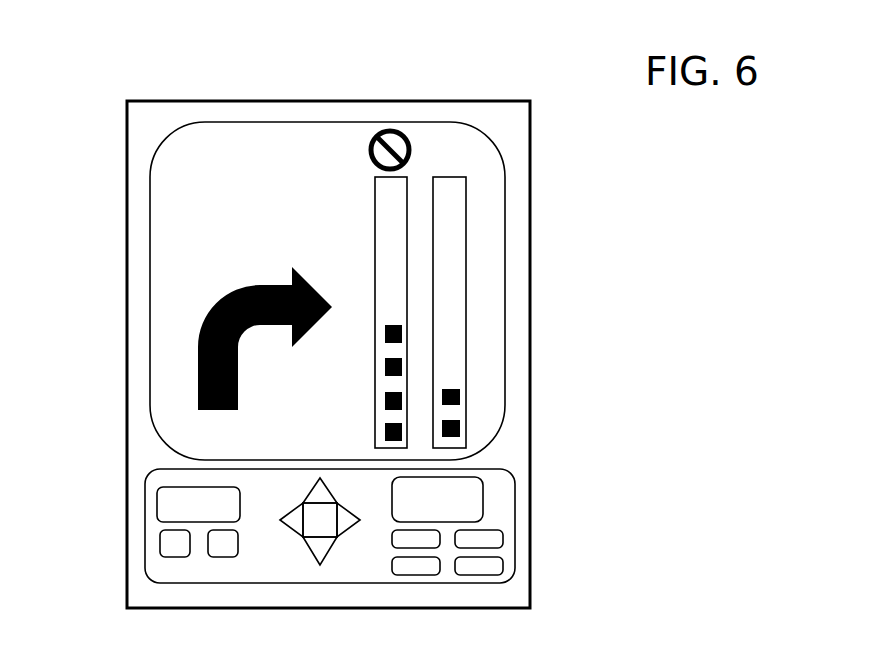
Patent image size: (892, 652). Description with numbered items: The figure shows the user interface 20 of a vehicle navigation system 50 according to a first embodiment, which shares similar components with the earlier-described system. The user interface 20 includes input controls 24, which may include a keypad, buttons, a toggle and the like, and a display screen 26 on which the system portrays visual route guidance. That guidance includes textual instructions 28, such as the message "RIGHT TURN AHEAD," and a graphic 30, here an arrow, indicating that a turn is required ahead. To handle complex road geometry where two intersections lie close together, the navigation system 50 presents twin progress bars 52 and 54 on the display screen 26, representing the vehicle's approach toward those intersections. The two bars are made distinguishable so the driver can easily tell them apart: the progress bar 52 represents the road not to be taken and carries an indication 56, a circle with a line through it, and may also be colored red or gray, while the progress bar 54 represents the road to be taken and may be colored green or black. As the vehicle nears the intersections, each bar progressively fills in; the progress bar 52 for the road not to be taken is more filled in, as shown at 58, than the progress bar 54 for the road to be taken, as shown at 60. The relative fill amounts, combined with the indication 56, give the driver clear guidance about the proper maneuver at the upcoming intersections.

The user interface 20 is at (171, 94).
The input controls 24 is at (141, 469).
The display screen 26 is at (152, 144).
The textual instructions 28 is at (245, 137).
The graphic 30 is at (180, 348).
The navigation system 50 is at (236, 77).
The progress bar 52 is at (484, 245).
The progress bar 54 is at (530, 312).
The indication 56 is at (422, 142).
The filled-in portion of progress bar 58 is at (406, 298).
The filled-in portion of progress bar 60 is at (457, 368).